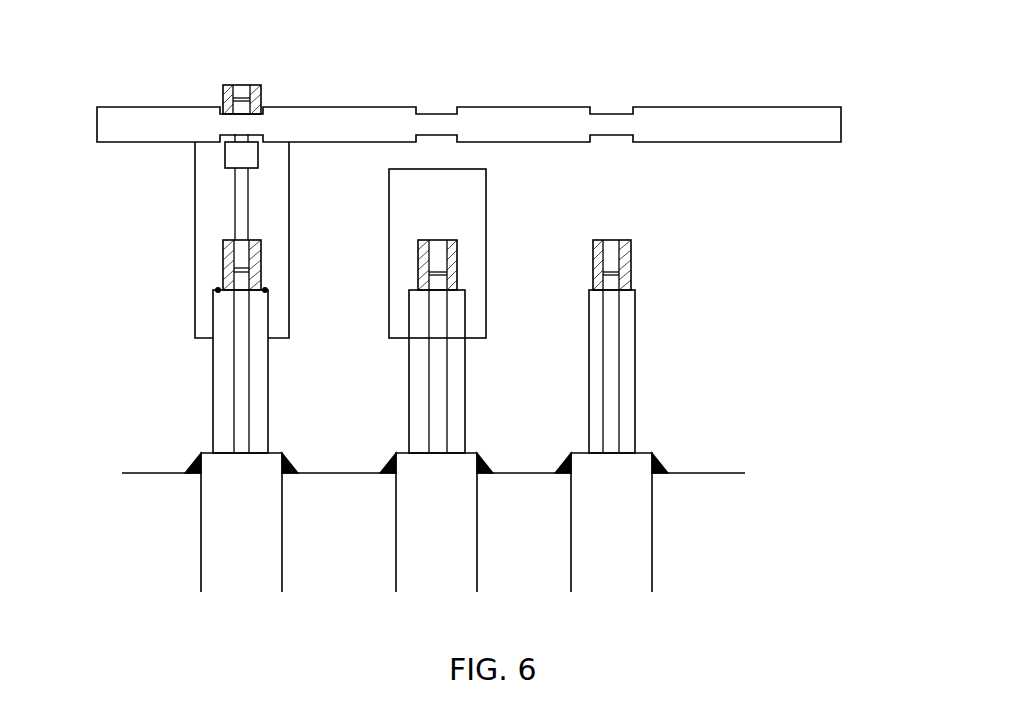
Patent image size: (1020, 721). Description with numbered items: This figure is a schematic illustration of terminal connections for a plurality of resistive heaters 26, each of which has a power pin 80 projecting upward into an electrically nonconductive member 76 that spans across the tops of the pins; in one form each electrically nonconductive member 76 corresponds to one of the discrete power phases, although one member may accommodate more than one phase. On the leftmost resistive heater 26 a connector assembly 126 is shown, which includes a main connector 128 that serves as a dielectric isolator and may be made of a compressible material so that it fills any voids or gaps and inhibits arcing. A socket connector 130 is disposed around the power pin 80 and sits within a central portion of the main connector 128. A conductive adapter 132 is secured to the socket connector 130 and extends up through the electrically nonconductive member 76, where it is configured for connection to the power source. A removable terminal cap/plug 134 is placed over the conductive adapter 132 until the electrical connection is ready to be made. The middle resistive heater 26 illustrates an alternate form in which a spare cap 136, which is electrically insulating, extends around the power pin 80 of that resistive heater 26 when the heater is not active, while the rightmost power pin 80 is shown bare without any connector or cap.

The resistive heater 26 is at (218, 535).
The electrically nonconductive member 76 is at (805, 118).
The power pin 80 is at (240, 292).
The connector assembly 126 is at (146, 203).
The main connector 128 is at (195, 290).
The socket connector 130 is at (255, 246).
The conductive adapter 132 is at (253, 152).
The terminal cap/plug 134 is at (229, 90).
The spare cap 136 is at (486, 211).